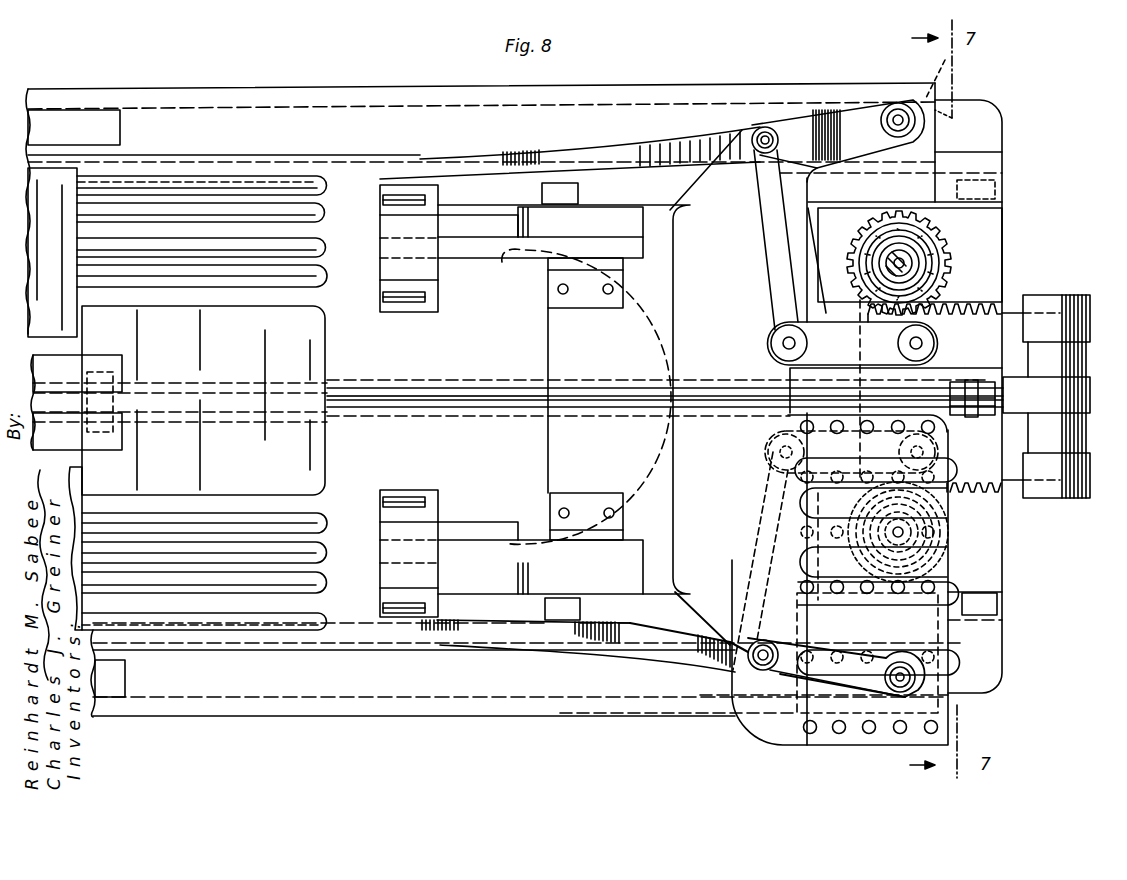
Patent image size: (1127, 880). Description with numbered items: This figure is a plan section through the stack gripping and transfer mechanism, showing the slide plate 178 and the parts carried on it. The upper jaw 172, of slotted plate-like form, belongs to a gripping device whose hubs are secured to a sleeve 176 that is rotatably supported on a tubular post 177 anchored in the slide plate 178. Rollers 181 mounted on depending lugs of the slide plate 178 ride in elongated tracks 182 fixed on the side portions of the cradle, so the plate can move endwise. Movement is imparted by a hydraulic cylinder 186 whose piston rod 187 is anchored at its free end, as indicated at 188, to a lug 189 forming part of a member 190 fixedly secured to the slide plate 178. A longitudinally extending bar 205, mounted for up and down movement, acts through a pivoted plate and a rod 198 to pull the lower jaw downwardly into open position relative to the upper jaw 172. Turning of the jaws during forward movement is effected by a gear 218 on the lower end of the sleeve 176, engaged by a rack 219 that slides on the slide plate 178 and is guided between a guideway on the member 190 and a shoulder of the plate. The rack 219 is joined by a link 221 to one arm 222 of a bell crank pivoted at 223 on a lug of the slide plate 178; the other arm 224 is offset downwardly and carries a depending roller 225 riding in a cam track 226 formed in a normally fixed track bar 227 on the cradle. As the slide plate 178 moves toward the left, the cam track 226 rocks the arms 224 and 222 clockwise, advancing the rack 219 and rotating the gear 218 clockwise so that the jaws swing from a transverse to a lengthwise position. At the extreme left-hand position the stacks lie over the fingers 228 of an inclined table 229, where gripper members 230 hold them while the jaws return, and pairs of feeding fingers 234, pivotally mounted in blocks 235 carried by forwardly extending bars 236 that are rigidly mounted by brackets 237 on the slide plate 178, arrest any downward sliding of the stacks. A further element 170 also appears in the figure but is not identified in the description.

The track bar 227 is at (690, 68).
The cam track 226 is at (600, 135).
The feeding fingers 234 is at (363, 190).
The fingered portions 228 is at (328, 280).
The gripper members 230 is at (70, 304).
The hydraulic cylinder 186 is at (97, 355).
The inclined table 229 is at (340, 442).
The jaw opening bar 205 is at (390, 384).
The piston rod 187 is at (528, 368).
The forwardly extending bars 236 is at (511, 254).
The brackets 237 is at (555, 300).
The slide plate 178 is at (561, 450).
The rollers 181 is at (540, 192).
The tracks 182 is at (990, 162).
The rod 198 is at (850, 244).
The tubular post 177 is at (934, 234).
The gear 218 is at (930, 254).
The sleeve 176 is at (916, 263).
The rack 219 is at (994, 296).
The piston rod anchorage 188 is at (940, 369).
The lug 189 is at (952, 380).
The member 190 is at (850, 387).
The link 221 is at (833, 350).
The bell crank arm 222 is at (762, 239).
The bell crank pivot 223 is at (765, 135).
The bell crank arm 224 is at (851, 113).
The depending roller 225 is at (952, 78).
The perforated bars 170 is at (945, 548).
The upper jaw 172 is at (757, 533).
The blocks 235 is at (425, 234).